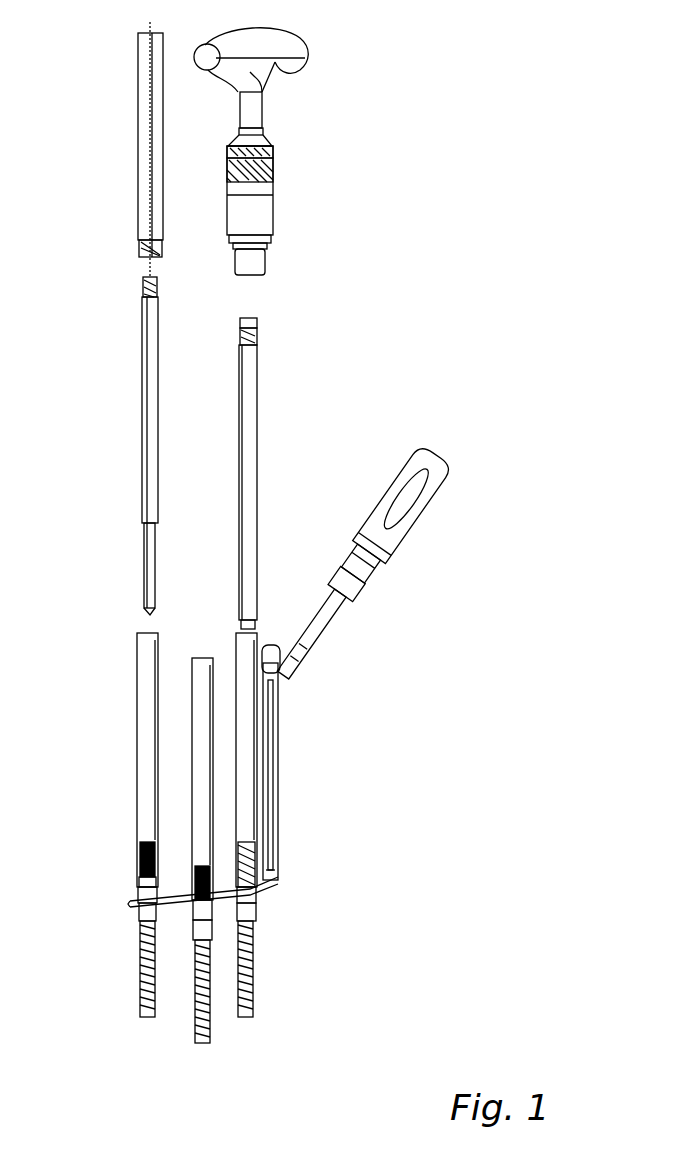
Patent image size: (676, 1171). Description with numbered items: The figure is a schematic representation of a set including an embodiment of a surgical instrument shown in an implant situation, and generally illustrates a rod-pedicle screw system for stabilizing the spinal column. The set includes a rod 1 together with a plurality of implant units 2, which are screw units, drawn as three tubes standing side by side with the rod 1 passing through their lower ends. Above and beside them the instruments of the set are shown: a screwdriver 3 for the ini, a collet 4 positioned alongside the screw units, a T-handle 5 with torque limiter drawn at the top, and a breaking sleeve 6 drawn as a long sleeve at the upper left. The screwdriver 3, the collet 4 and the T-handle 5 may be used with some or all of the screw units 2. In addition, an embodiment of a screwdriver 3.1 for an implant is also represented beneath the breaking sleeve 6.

The rod 1 is at (172, 906).
The implant units 2 is at (233, 717).
The screwdriver 3 is at (250, 463).
The screwdriver 3.1 is at (150, 402).
The collet 4 is at (300, 695).
The T-handle 5 is at (268, 185).
The breaking sleeve 6 is at (148, 120).